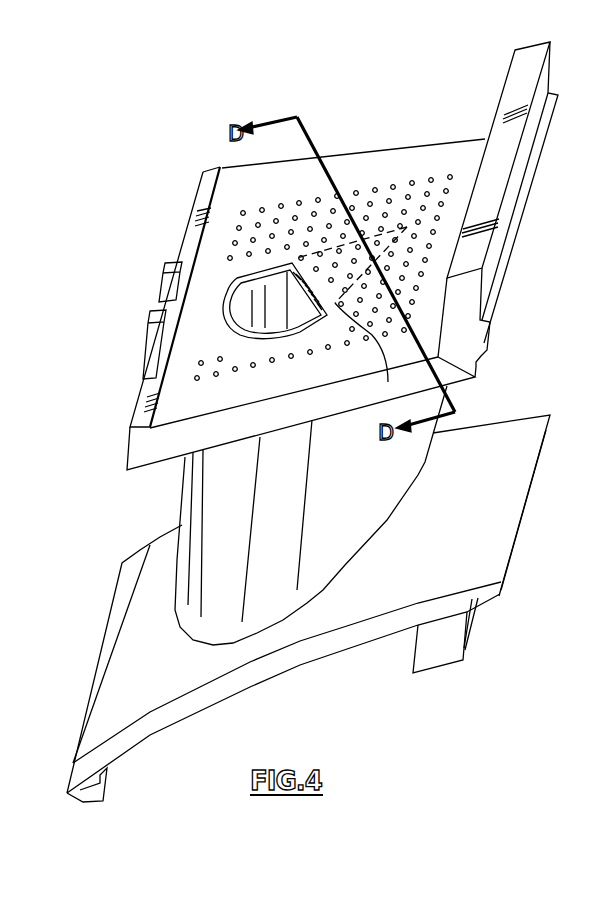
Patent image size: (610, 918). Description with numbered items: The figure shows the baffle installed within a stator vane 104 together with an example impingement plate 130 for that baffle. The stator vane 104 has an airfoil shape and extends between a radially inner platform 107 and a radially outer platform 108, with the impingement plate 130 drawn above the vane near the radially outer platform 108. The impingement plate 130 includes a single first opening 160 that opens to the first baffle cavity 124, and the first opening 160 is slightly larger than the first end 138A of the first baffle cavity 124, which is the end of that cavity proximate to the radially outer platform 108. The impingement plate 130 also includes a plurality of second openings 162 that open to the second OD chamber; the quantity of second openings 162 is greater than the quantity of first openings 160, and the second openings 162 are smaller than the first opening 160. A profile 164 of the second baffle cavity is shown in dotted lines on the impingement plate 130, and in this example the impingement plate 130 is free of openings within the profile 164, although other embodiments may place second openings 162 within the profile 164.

The stator vane 104 is at (343, 545).
The radially inner platform 107 is at (499, 510).
The radially outer platform 108 is at (168, 452).
The first baffle cavity 124 is at (241, 289).
The impingement plate 130 is at (417, 156).
The first end of the first baffle cavity 138A is at (229, 284).
The first opening 160 is at (224, 313).
The second openings 162 is at (243, 210).
The profile of the second baffle cavity 164 is at (388, 382).